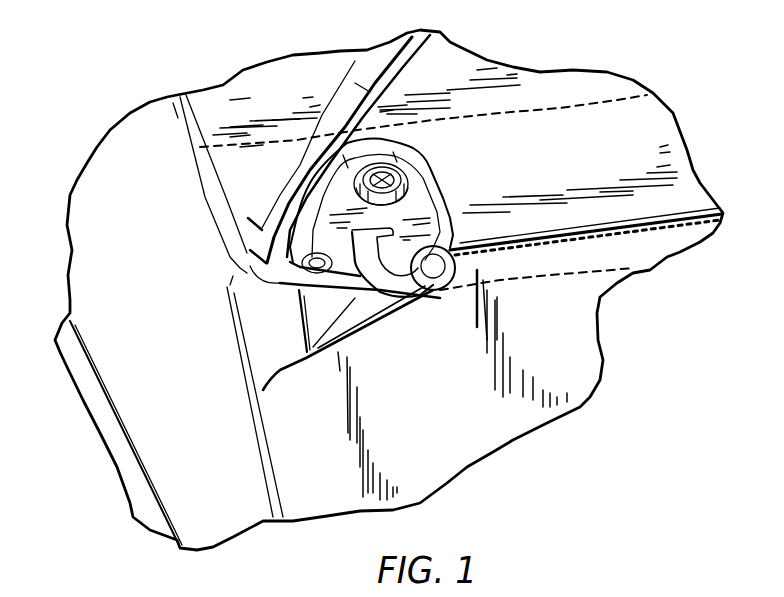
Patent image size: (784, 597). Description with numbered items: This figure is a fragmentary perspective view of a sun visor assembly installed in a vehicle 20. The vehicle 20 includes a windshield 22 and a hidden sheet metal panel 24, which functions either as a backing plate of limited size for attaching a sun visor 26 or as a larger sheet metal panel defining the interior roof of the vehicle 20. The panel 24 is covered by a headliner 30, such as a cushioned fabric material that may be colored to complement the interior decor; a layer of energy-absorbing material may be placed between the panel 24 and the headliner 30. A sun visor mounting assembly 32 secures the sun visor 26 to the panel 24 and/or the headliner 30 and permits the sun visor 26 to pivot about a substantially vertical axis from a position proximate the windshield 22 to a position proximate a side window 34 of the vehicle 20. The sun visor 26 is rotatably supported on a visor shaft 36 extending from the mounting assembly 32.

The vehicle 20 is at (692, 93).
The windshield 22 is at (332, 324).
The hidden sheet metal panel 24 is at (608, 121).
The sun visor 26 is at (432, 366).
The headliner 30 is at (230, 102).
The sun visor mounting assembly 32 is at (437, 160).
The side window 34 is at (108, 421).
The visor shaft 36 is at (637, 247).